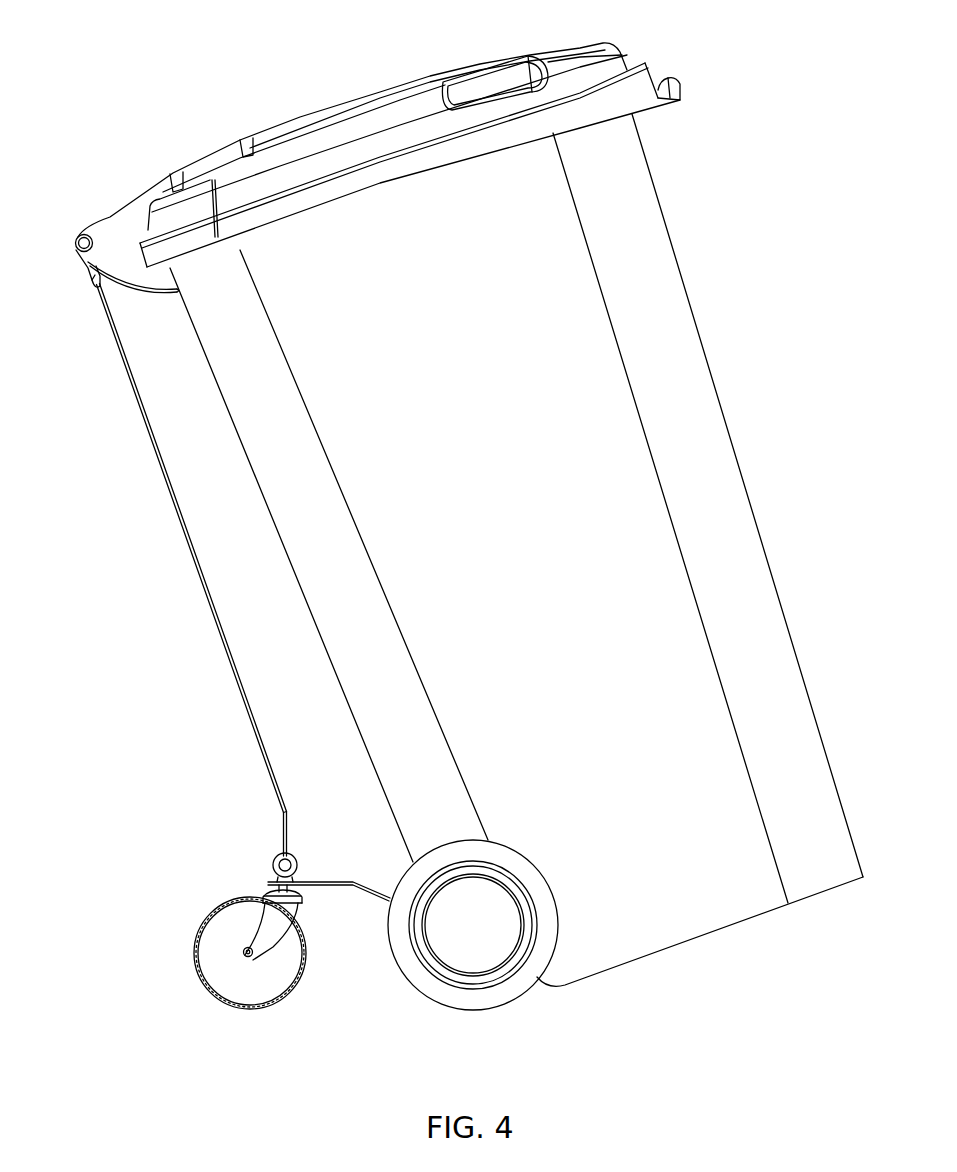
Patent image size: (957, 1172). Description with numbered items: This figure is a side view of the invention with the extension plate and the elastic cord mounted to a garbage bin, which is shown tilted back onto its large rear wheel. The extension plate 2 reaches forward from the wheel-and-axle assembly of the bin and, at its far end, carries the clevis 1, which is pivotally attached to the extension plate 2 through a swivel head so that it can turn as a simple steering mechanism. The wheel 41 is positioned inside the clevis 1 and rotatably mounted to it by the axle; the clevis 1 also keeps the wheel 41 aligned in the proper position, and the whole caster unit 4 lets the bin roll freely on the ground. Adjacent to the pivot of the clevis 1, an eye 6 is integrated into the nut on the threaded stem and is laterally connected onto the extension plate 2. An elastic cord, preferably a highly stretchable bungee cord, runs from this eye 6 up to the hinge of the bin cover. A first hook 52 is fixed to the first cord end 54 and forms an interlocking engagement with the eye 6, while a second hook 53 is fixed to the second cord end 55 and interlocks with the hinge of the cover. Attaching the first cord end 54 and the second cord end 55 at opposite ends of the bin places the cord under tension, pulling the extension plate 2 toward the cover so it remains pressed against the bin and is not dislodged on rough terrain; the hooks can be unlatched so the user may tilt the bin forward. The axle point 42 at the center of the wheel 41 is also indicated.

The clevis 1 is at (303, 900).
The extension plate 2 is at (380, 880).
The caster wheel unit 4 is at (239, 964).
The eye 6 is at (273, 865).
The wheel 41 is at (280, 1003).
The axle 42 is at (262, 984).
The first hook 52 is at (282, 830).
The second hook 53 is at (98, 273).
The first cord end 54 is at (295, 815).
The second cord end 55 is at (90, 284).